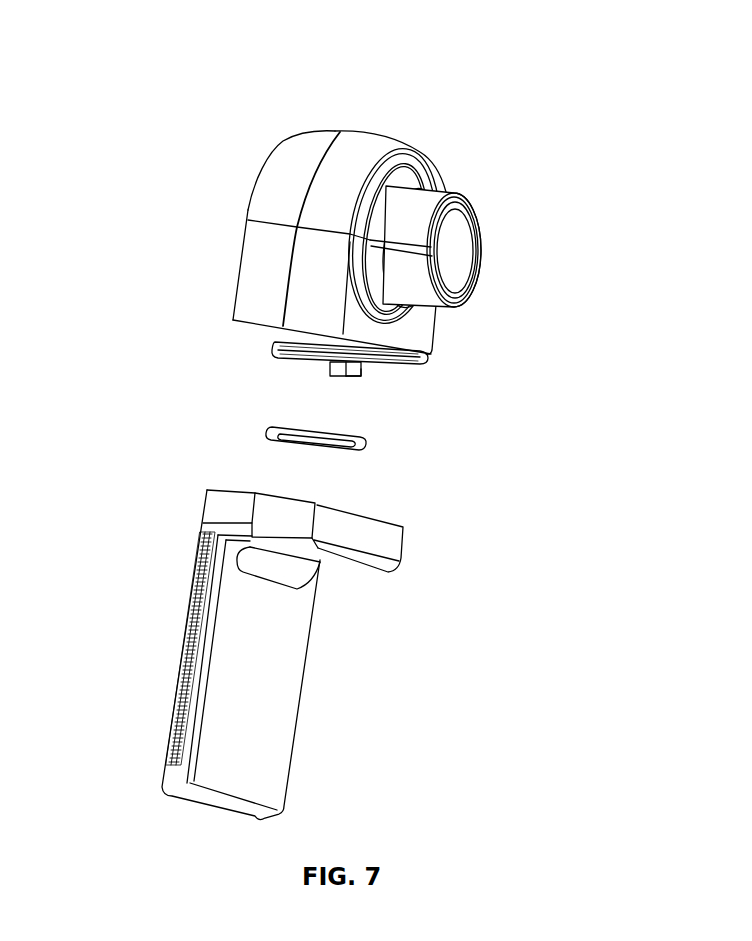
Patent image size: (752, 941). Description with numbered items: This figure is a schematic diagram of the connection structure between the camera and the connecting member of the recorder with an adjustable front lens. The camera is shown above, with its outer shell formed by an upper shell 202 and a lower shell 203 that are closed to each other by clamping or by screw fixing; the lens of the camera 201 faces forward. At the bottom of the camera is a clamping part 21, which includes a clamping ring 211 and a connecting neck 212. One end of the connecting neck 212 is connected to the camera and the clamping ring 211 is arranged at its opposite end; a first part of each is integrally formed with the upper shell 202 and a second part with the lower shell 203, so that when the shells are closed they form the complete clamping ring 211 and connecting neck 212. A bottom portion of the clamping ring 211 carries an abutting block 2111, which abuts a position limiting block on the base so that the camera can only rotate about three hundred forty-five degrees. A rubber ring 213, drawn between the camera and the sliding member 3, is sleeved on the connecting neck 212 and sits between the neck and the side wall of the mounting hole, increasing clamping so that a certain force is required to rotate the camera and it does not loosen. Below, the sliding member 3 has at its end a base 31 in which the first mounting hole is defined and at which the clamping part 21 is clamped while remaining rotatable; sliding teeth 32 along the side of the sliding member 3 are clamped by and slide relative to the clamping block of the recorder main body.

The lens 201 is at (458, 240).
The upper shell 202 is at (382, 140).
The lower shell 203 is at (300, 143).
The clamping part 21 is at (441, 394).
The clamping ring 211 is at (390, 367).
The abutting block 2111 is at (363, 380).
The connecting neck 212 is at (363, 350).
The rubber ring 213 is at (350, 443).
The sliding member 3 is at (285, 655).
The base 31 is at (383, 545).
The sliding teeth 32 is at (192, 627).